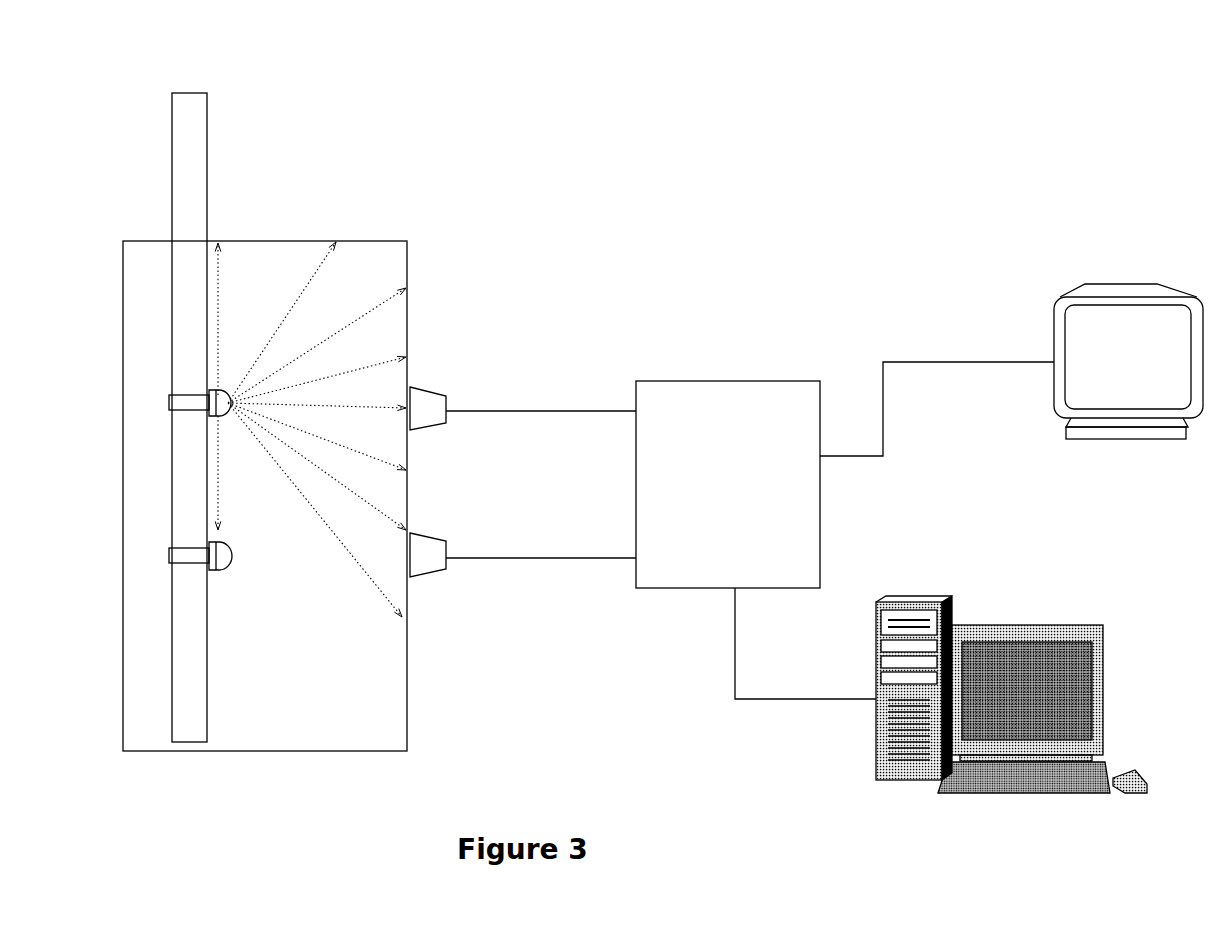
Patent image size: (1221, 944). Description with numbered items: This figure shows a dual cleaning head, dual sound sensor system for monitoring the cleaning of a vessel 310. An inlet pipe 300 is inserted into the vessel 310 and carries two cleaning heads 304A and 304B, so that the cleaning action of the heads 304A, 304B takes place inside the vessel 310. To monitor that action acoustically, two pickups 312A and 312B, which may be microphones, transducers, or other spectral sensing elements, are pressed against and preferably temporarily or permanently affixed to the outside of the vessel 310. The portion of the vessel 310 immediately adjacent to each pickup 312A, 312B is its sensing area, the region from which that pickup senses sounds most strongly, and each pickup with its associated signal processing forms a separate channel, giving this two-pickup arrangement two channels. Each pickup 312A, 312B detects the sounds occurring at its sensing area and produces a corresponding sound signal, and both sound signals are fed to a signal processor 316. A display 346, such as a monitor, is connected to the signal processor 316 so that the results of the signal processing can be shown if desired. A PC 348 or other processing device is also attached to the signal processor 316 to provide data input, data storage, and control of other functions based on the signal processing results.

The inlet pipe 300 is at (207, 159).
The vessel 310 is at (407, 707).
The cleaning head 304A is at (224, 392).
The cleaning head 304B is at (227, 562).
The pickup 312A is at (442, 393).
The pickup 312B is at (430, 573).
The signal processor 316 is at (717, 380).
The display 346 is at (1097, 284).
The PC 348 is at (1012, 623).